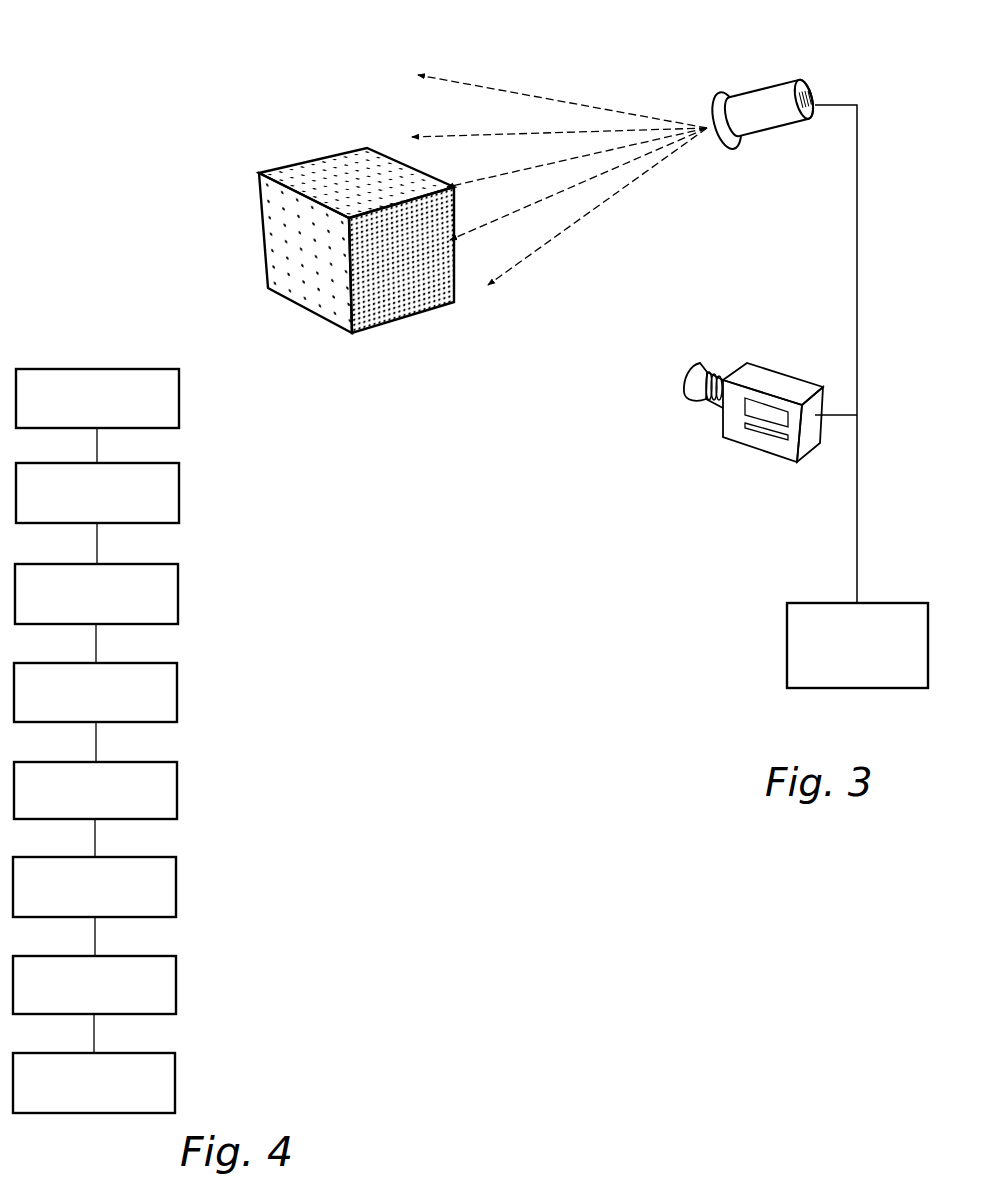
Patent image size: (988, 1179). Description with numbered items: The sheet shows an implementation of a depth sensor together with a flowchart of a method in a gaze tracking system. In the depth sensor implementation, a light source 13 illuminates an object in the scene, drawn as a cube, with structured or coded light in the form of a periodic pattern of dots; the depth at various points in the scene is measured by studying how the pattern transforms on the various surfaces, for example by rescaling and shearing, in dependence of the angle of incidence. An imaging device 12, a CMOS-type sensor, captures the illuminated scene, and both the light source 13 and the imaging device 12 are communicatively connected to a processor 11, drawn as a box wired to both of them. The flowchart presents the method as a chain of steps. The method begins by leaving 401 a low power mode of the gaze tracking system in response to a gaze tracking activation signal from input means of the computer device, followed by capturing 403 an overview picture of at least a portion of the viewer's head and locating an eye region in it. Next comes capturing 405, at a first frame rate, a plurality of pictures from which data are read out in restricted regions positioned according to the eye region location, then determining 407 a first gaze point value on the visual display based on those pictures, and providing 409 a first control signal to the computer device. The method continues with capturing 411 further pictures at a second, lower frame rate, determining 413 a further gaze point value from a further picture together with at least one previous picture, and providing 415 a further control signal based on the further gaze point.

In FIG. 3, the processor 11 is at (787, 648).
In FIG. 3, the first imaging device 12 is at (762, 375).
In FIG. 3, the light source 13 is at (765, 105).
In FIG. 4, the leaving a low power mode 401 is at (179, 400).
In FIG. 4, the capturing an overview picture 403 is at (179, 494).
In FIG. 4, the capturing a plurality of pictures at a first frame rate 405 is at (178, 595).
In FIG. 4, the determining a first gaze point value 407 is at (177, 694).
In FIG. 4, the providing a first control signal 409 is at (177, 791).
In FIG. 4, the capturing further pictures at a second frame rate 411 is at (176, 888).
In FIG. 4, the determining a further gaze point value 413 is at (176, 987).
In FIG. 4, the providing a further control signal 415 is at (175, 1084).